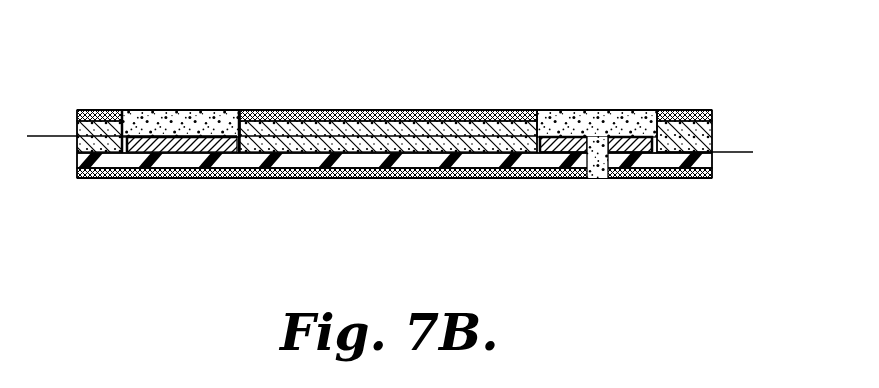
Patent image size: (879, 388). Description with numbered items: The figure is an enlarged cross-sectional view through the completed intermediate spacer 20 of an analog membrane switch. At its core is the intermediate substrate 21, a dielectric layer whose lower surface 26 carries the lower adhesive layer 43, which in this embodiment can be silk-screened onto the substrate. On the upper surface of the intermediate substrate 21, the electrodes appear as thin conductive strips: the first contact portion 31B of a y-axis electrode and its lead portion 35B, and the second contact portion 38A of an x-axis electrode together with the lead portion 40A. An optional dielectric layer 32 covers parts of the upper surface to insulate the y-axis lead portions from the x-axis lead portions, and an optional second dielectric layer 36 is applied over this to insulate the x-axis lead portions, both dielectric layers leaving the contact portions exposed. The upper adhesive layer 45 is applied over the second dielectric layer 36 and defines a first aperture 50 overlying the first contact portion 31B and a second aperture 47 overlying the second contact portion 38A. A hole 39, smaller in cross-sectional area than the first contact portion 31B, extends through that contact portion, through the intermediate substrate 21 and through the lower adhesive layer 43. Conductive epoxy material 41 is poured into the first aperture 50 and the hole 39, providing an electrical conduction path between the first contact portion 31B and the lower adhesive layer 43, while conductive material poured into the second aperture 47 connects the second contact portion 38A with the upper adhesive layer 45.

The intermediate spacer 20 is at (752, 137).
The intermediate substrate 21 is at (401, 163).
The lower surface 26 is at (340, 177).
The first contact portion 31B is at (627, 140).
The dielectric layer 32 is at (117, 137).
The lead portion 35B is at (726, 150).
The second dielectric layer 36 is at (90, 115).
The second contact portion 38A is at (193, 140).
The hole 39 is at (600, 180).
The lead portion 40A is at (57, 135).
The conductive epoxy material 41 is at (156, 123).
The lower adhesive layer 43 is at (470, 180).
The upper adhesive layer 45 is at (479, 114).
The second aperture 47 is at (228, 116).
The first aperture 50 is at (558, 118).